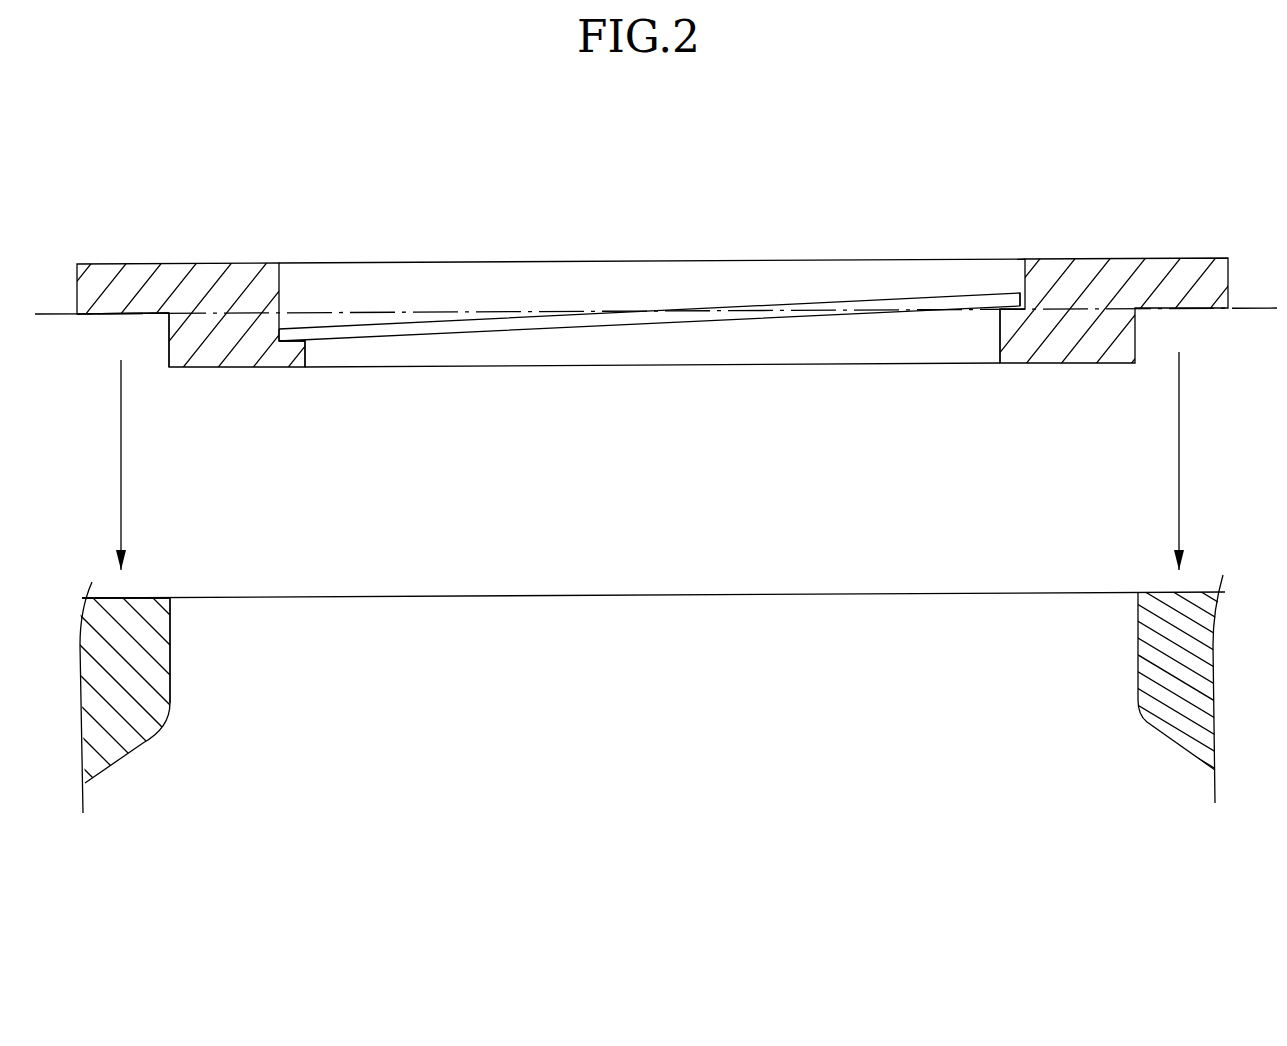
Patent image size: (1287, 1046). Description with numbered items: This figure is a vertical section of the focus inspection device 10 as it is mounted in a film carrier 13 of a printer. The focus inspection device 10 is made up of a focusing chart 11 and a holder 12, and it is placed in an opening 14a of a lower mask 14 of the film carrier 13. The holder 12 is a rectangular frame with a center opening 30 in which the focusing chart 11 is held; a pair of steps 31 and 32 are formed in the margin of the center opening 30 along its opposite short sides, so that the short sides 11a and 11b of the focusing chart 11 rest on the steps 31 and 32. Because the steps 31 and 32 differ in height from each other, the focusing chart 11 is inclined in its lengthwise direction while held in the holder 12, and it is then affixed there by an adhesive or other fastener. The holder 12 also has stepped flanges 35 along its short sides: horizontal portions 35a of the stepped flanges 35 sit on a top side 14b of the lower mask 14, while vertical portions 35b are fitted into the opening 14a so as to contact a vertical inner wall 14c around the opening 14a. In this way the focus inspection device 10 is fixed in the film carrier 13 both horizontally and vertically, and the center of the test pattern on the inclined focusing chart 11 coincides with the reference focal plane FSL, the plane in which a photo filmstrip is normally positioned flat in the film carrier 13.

The focus inspection device 10 is at (847, 260).
The focusing chart 11 is at (740, 307).
The short side of the focusing chart 11a is at (300, 330).
The short side of the focusing chart 11b is at (1013, 297).
The holder 12 is at (1088, 268).
The film carrier 13 is at (692, 570).
The lower mask 14 is at (142, 720).
The opening 14a is at (480, 607).
The top side 14b is at (142, 598).
The vertical inner wall 14c is at (170, 627).
The center opening 30 is at (280, 293).
The step 31 is at (293, 348).
The step 32 is at (1003, 315).
The stepped flange 35 is at (120, 340).
The horizontal portion 35a is at (120, 316).
The vertical portion 35b is at (168, 348).
The reference focal plane FSL is at (420, 313).